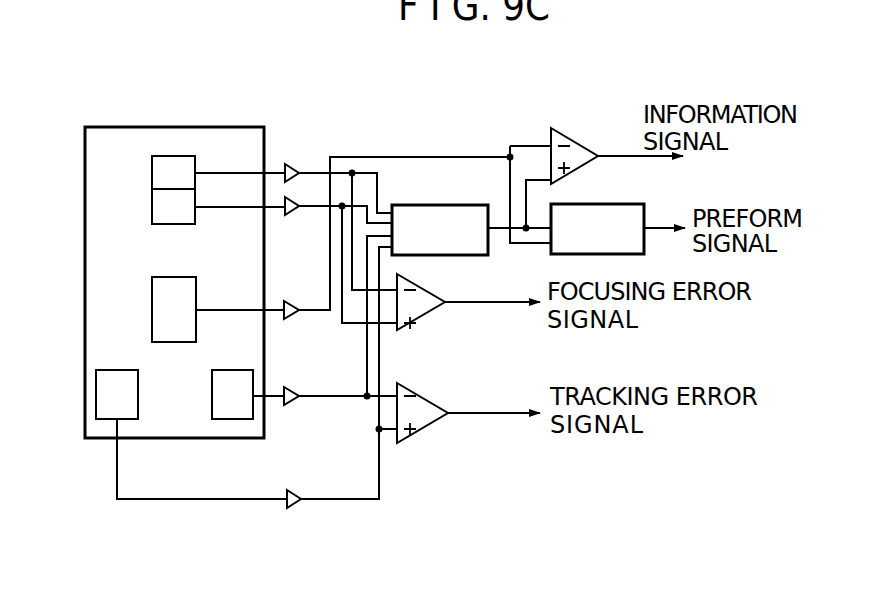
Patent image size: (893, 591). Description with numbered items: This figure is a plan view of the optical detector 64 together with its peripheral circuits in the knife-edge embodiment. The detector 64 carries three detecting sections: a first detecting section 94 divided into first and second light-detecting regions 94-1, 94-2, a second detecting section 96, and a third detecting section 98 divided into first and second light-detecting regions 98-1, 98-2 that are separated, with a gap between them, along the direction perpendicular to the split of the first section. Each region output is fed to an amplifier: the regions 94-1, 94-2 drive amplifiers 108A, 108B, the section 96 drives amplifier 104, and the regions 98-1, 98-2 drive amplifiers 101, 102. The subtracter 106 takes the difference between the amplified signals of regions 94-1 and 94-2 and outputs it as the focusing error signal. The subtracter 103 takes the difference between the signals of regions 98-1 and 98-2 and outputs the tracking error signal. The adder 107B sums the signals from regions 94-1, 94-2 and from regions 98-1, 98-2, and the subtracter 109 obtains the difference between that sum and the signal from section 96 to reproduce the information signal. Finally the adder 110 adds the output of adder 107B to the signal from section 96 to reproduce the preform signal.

The detector 64 is at (283, 142).
The first detecting section 94 is at (180, 191).
The first light-detecting region 94-1 is at (180, 170).
The second light-detecting region 94-2 is at (185, 215).
The second detecting section 96 is at (152, 309).
The third detecting section 98 is at (158, 426).
The first light-detecting region 98-1 is at (112, 413).
The second light-detecting region 98-2 is at (233, 412).
The amplifier 108A is at (292, 164).
The amplifier 108B is at (290, 215).
The amplifier 104 is at (290, 318).
The amplifier 101 is at (291, 405).
The amplifier 102 is at (294, 508).
The adder 107B is at (452, 205).
The subtracter 106 is at (425, 292).
The subtracter 103 is at (432, 432).
The subtracter 109 is at (566, 128).
The adder 110 is at (592, 204).